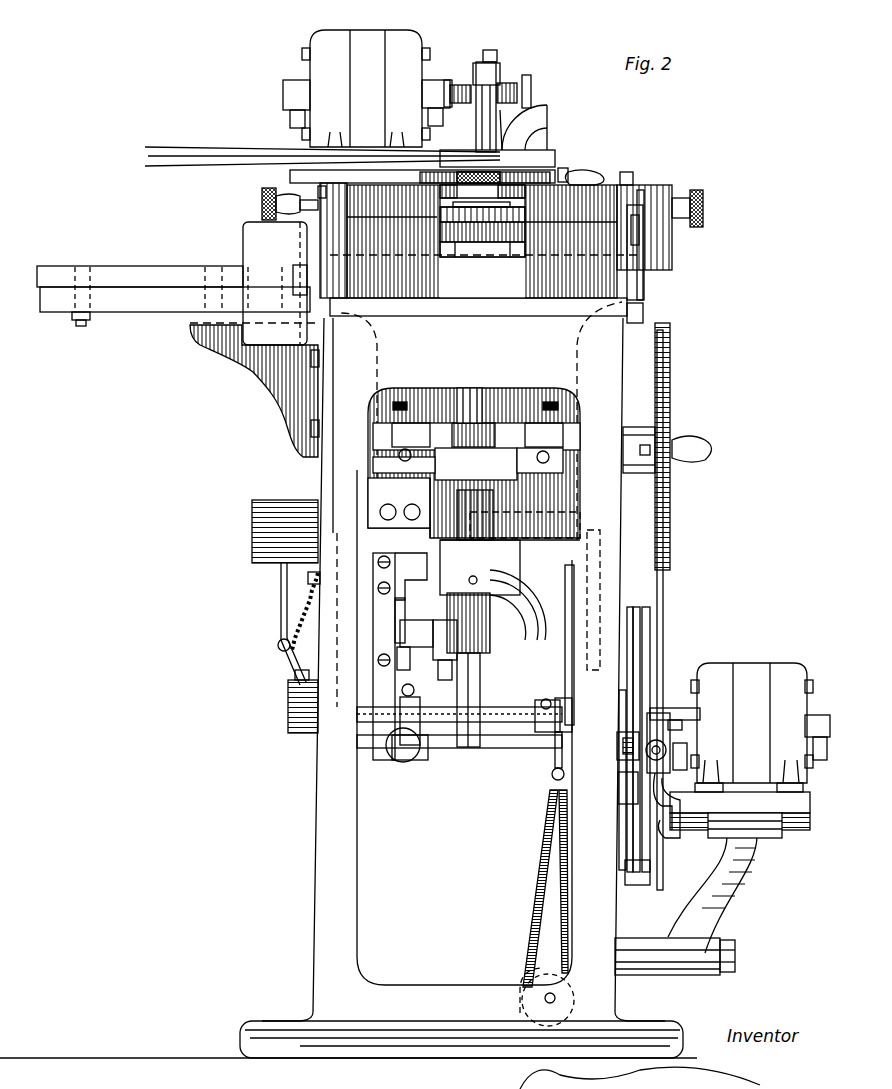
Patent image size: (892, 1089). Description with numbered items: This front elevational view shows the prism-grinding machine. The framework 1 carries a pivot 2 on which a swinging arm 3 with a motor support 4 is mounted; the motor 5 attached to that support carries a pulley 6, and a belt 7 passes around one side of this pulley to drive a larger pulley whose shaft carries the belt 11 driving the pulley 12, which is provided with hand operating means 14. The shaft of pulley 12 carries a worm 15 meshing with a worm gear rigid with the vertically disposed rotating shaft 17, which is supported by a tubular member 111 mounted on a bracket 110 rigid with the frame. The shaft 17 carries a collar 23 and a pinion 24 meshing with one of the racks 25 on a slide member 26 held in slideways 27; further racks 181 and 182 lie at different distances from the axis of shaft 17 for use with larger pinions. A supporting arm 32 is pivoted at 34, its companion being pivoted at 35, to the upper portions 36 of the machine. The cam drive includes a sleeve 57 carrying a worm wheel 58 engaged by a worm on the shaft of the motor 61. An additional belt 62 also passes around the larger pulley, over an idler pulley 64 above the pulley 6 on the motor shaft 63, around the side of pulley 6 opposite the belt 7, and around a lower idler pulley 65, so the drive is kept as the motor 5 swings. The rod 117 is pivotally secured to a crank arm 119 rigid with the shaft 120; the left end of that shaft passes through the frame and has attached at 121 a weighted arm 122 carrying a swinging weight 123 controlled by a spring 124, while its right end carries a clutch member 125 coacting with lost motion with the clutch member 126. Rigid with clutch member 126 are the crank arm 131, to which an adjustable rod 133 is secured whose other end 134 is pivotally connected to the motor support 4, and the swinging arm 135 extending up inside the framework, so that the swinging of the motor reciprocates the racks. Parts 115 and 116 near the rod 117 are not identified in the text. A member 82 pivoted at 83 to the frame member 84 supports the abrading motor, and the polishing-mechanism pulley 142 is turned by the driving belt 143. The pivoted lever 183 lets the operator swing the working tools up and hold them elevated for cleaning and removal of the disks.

The framework 1 is at (318, 828).
The pivot 2 is at (730, 946).
The swinging arm 3 is at (745, 880).
The motor support 4 is at (800, 806).
The motor 5 is at (790, 670).
The pulley 6 is at (620, 742).
The belt 7 is at (642, 866).
The belt 11 is at (663, 588).
The pulley 12 is at (670, 520).
The hand operating means 14 is at (700, 442).
The worm 15 is at (485, 428).
The vertically disposed rotating shaft 17 is at (473, 390).
The collar 23 is at (508, 605).
The pinion 24 is at (492, 646).
The rack 25 is at (443, 638).
The slide member 26 is at (437, 675).
The slideways 27 is at (378, 556).
The supporting arm 32 is at (300, 186).
The pivot 34 is at (695, 200).
The pivot 35 is at (262, 205).
The upper portions of the machine 36 is at (632, 277).
The sleeve 57 is at (478, 86).
The worm wheel 58 is at (508, 83).
The motor 61 is at (327, 55).
The additional belt 62 is at (638, 612).
The motor shaft 63 is at (660, 715).
The idler pulley 64 is at (650, 648).
The idler pulley 65 is at (623, 786).
The member 82 is at (125, 270).
The pivot 83 is at (80, 326).
The frame member 84 is at (150, 310).
The bracket 110 is at (563, 530).
The tubular member 111 is at (485, 558).
The plate 115 is at (390, 624).
The bracket 116 is at (420, 752).
The rod 117 is at (395, 760).
The crank arm 119 is at (418, 725).
The shaft 120 is at (500, 716).
The attachment point 121 is at (298, 716).
The weighted arm 122 is at (290, 618).
The swinging weight 123 is at (262, 530).
The spring 124 is at (305, 597).
The clutch member 125 is at (545, 706).
The clutch member 126 is at (565, 712).
The crank arm 131 is at (668, 727).
The adjustable rod 133 is at (660, 826).
The rod end 134 is at (665, 812).
The swinging arm 135 is at (568, 672).
The pulley 142 is at (500, 146).
The driving belt 143 is at (242, 158).
The rack 181 is at (398, 662).
The rack 182 is at (420, 632).
The pivoted lever 183 is at (574, 170).